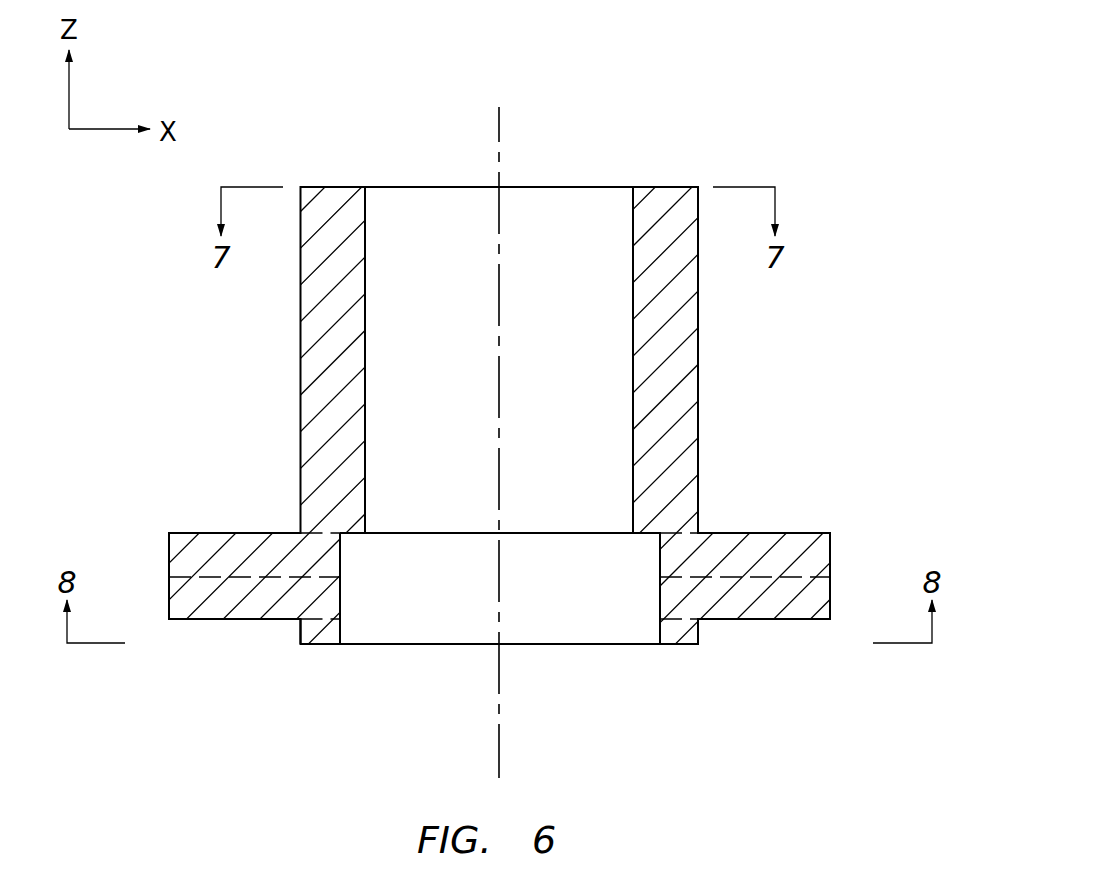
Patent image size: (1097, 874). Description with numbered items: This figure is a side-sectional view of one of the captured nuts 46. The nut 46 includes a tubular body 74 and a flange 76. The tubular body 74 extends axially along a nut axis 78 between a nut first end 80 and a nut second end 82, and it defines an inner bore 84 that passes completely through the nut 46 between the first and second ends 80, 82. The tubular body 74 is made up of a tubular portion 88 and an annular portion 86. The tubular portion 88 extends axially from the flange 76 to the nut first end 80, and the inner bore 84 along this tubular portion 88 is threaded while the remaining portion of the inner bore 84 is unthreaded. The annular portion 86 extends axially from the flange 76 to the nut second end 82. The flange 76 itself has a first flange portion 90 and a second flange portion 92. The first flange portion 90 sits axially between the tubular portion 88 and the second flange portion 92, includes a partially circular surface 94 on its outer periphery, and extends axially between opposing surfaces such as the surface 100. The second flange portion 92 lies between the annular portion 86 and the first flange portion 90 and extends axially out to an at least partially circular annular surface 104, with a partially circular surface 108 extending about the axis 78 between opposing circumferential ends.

The nut 46 is at (724, 125).
The tubular body 74 is at (700, 352).
The flange 76 is at (775, 528).
The nut axis 78 is at (499, 775).
The nut first end 80 is at (333, 187).
The nut second end 82 is at (323, 644).
The inner bore 84 is at (543, 218).
The annular portion 86 is at (298, 640).
The tubular portion 88 is at (298, 355).
The first flange portion 90 is at (167, 553).
The second flange portion 92 is at (167, 600).
The partially circular surface 94 is at (830, 547).
The axially opposing surface 100 is at (229, 533).
The annular surface 104 is at (750, 619).
The partially circular surface 108 is at (830, 598).